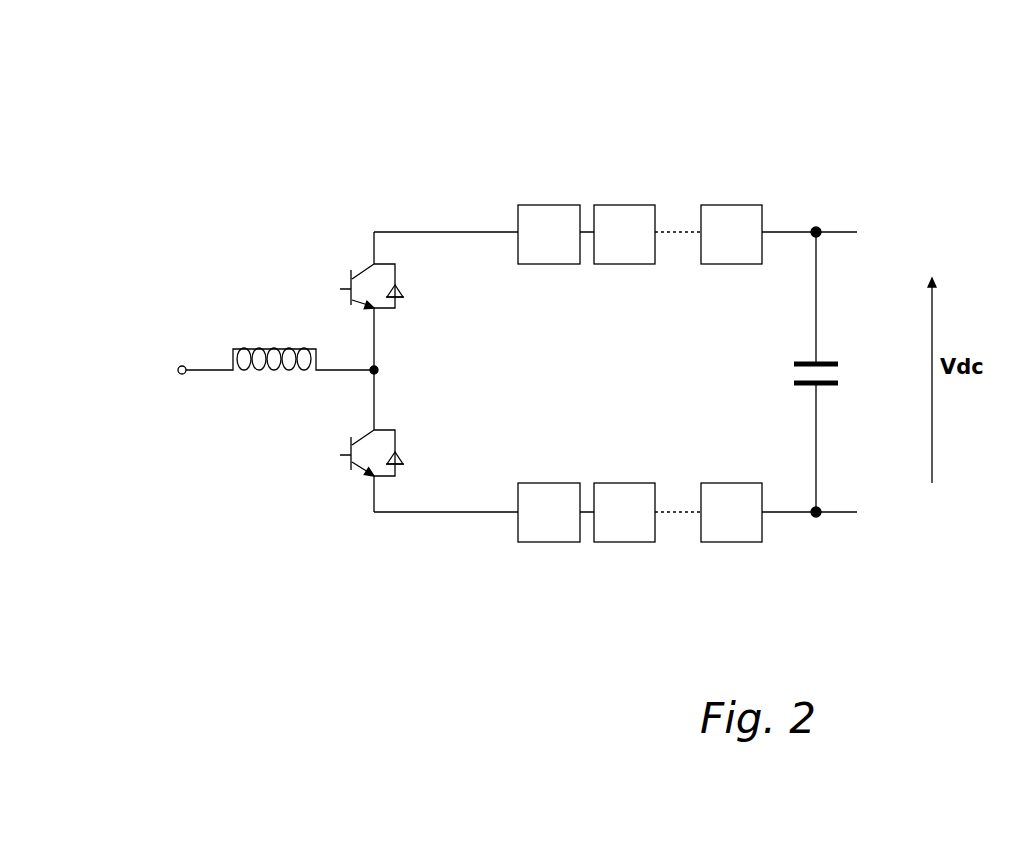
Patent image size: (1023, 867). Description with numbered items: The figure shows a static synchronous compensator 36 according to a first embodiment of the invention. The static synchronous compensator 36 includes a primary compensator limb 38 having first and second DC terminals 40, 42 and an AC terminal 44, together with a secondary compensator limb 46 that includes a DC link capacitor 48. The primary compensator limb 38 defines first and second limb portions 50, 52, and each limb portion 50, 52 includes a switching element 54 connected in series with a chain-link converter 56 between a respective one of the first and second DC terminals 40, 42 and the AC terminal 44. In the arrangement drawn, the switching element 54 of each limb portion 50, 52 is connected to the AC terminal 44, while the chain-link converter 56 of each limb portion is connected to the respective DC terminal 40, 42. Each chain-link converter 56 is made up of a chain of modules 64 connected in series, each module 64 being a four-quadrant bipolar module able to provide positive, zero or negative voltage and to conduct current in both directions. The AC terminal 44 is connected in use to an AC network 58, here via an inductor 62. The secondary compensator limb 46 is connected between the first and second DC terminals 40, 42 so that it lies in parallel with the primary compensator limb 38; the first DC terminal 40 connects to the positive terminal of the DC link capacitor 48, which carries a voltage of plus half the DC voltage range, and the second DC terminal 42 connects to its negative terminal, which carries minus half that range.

The static synchronous compensator 36 is at (240, 147).
The primary compensator limb 38 is at (638, 112).
The first DC terminal 40 is at (820, 230).
The second DC terminal 42 is at (816, 517).
The AC terminal 44 is at (380, 369).
The secondary compensator limb 46 is at (806, 176).
The DC link capacitor 48 is at (826, 358).
The first limb portion 50 is at (411, 222).
The second limb portion 52 is at (440, 524).
The switching element 54 is at (362, 270).
The chain-link converter 56 is at (610, 181).
The AC network 58 is at (165, 370).
The inductor 62 is at (273, 372).
The module 64 is at (564, 265).